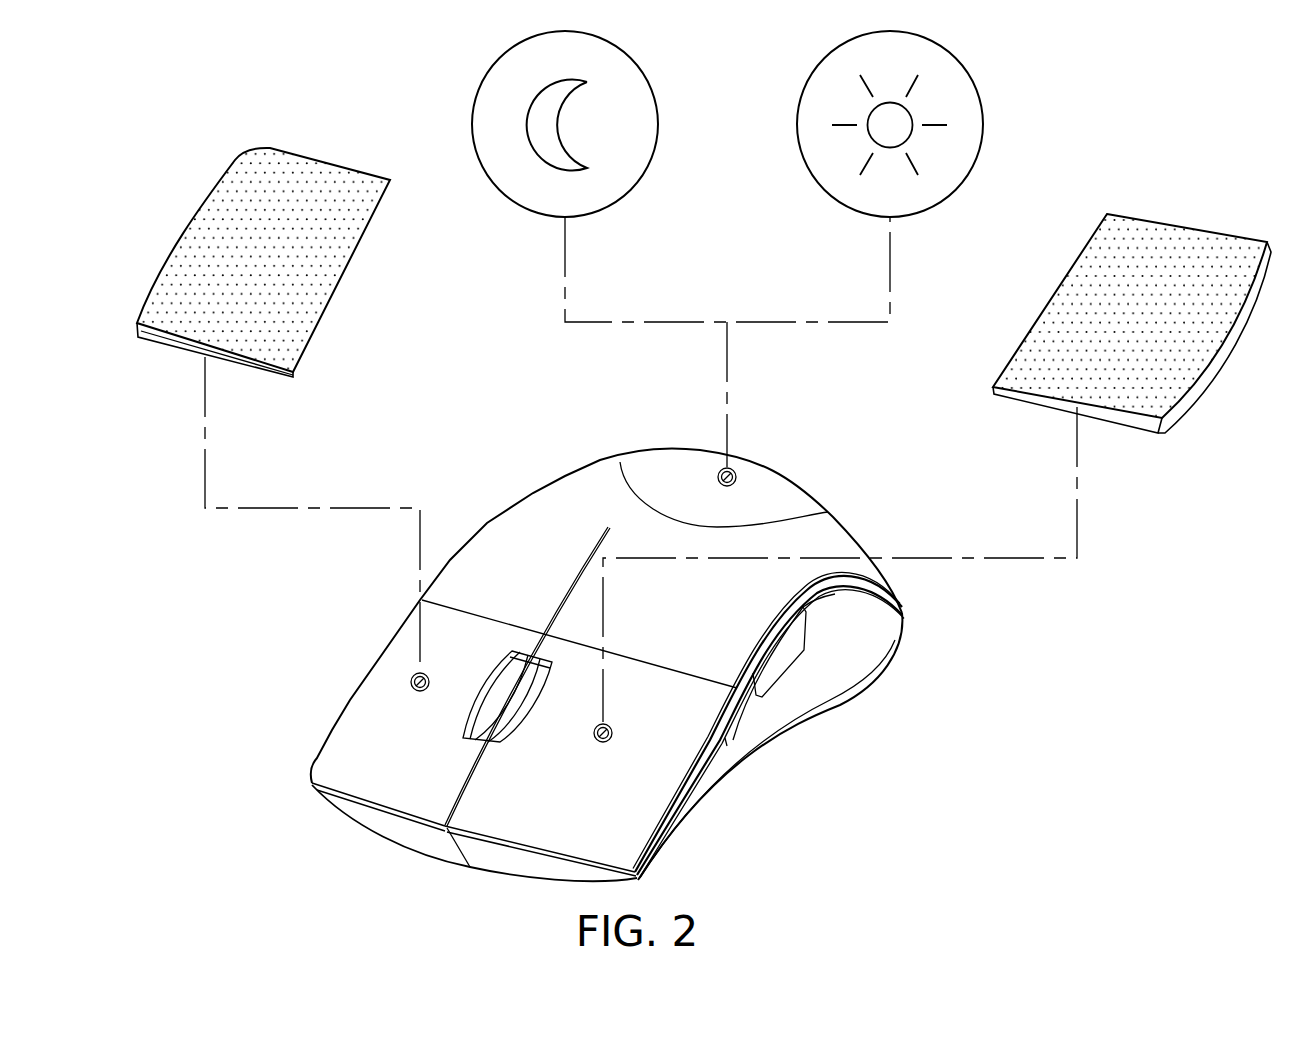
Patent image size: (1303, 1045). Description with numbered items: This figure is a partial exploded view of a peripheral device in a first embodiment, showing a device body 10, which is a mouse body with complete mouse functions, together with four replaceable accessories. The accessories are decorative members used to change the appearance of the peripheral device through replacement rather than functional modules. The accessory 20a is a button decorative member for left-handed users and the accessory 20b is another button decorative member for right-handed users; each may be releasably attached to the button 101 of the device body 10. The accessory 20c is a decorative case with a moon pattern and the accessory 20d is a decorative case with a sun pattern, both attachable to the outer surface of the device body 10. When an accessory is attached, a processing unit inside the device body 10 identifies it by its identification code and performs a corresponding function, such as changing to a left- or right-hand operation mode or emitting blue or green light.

The device body 10 is at (873, 520).
The button 101 is at (358, 735).
The accessory 20a is at (305, 173).
The accessory 20b is at (1166, 245).
The accessory 20c is at (472, 114).
The accessory 20d is at (983, 117).